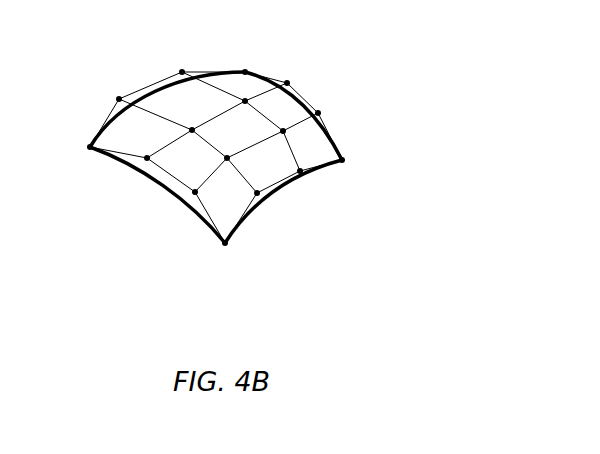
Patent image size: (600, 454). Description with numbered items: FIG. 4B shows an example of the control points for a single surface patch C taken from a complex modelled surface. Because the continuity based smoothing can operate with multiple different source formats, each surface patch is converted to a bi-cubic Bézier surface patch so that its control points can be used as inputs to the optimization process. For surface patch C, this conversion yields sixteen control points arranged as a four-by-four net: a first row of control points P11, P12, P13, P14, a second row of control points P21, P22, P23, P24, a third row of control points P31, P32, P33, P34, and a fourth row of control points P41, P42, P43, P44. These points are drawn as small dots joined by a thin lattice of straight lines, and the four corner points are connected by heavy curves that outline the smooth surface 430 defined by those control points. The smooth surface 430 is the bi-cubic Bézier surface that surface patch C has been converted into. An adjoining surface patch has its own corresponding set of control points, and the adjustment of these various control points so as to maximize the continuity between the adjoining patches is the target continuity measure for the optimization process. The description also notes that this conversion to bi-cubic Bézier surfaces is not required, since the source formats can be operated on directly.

The smooth surface 430 is at (216, 162).
The surface patch C is at (413, 79).
The control point P11 is at (247, 66).
The control point P12 is at (293, 79).
The control point P13 is at (327, 108).
The control point P14 is at (351, 155).
The control point P21 is at (181, 66).
The control point P22 is at (245, 93).
The control point P23 is at (286, 125).
The control point P24 is at (305, 163).
The control point P31 is at (113, 92).
The control point P32 is at (192, 121).
The control point P33 is at (230, 151).
The control point P34 is at (259, 187).
The control point P41 is at (81, 150).
The control point P42 is at (146, 152).
The control point P43 is at (204, 196).
The control point P44 is at (225, 253).